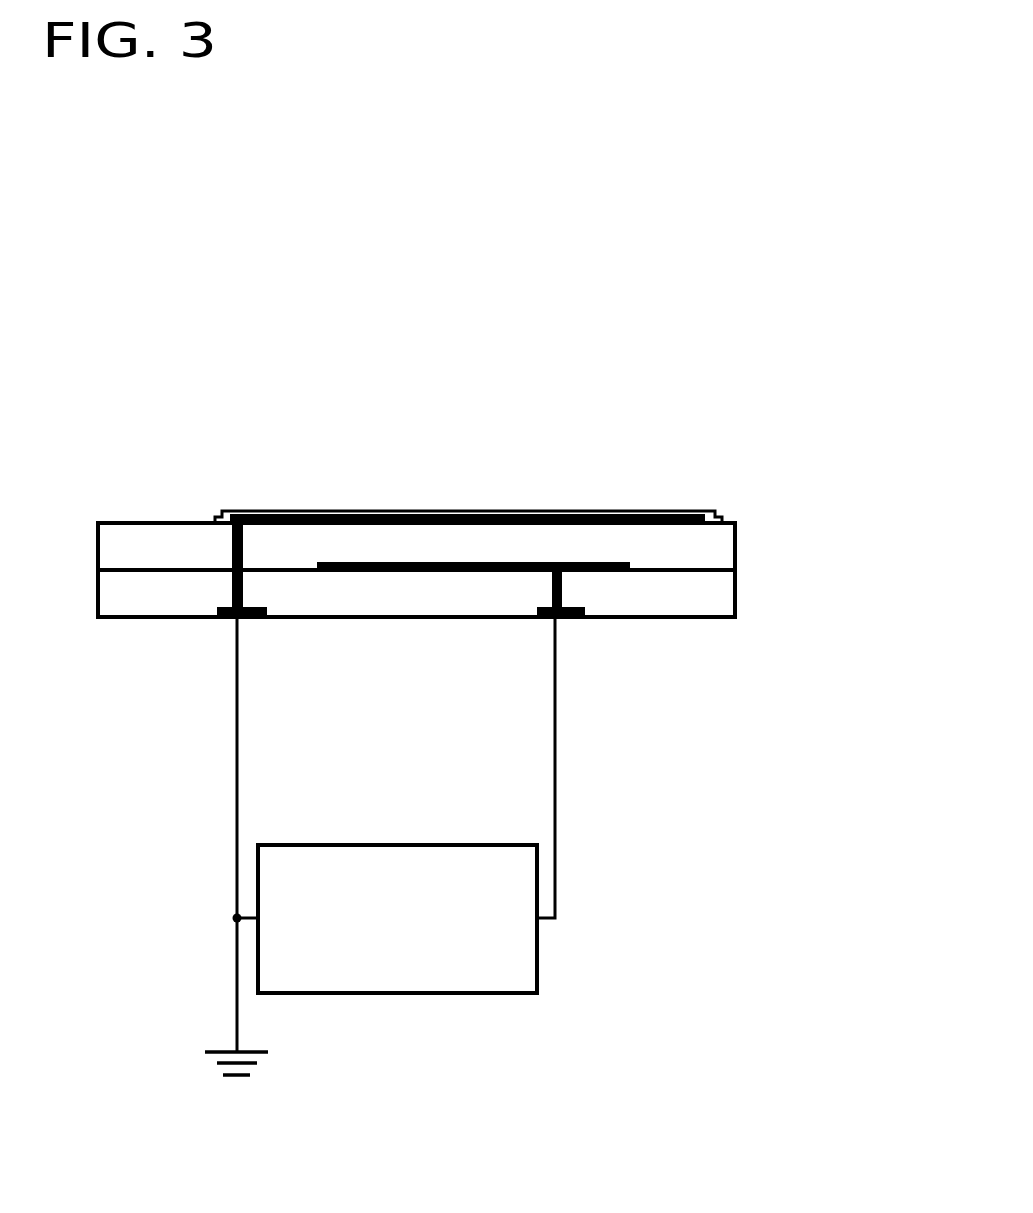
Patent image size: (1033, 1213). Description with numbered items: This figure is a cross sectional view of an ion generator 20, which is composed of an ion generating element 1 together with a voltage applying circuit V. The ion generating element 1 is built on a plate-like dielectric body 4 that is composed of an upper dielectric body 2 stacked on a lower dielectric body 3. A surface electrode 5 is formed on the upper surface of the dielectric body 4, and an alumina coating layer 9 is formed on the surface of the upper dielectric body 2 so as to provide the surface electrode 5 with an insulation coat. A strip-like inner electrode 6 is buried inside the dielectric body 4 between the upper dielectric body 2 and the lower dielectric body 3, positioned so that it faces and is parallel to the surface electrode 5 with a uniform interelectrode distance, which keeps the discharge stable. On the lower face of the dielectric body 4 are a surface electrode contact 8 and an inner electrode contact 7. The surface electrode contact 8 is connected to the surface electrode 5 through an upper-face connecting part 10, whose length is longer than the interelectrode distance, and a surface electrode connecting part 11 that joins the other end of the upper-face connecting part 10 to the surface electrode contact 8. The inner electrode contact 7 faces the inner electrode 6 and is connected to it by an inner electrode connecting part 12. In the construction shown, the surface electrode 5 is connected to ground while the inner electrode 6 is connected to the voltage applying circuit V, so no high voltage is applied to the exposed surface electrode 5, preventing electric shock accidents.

The ion generator 20 is at (706, 256).
The ion generating element 1 is at (684, 470).
The upper dielectric body 2 is at (637, 540).
The lower dielectric body 3 is at (697, 600).
The dielectric body 4 is at (750, 524).
The surface electrode 5 is at (328, 513).
The inner electrode 6 is at (410, 573).
The inner electrode contact 7 is at (585, 614).
The surface electrode contact 8 is at (265, 613).
The alumina coating layer 9 is at (216, 516).
The upper-face connecting part 10 is at (229, 512).
The surface electrode connecting part 11 is at (232, 582).
The inner electrode connecting part 12 is at (550, 590).
The voltage applying circuit V is at (417, 993).